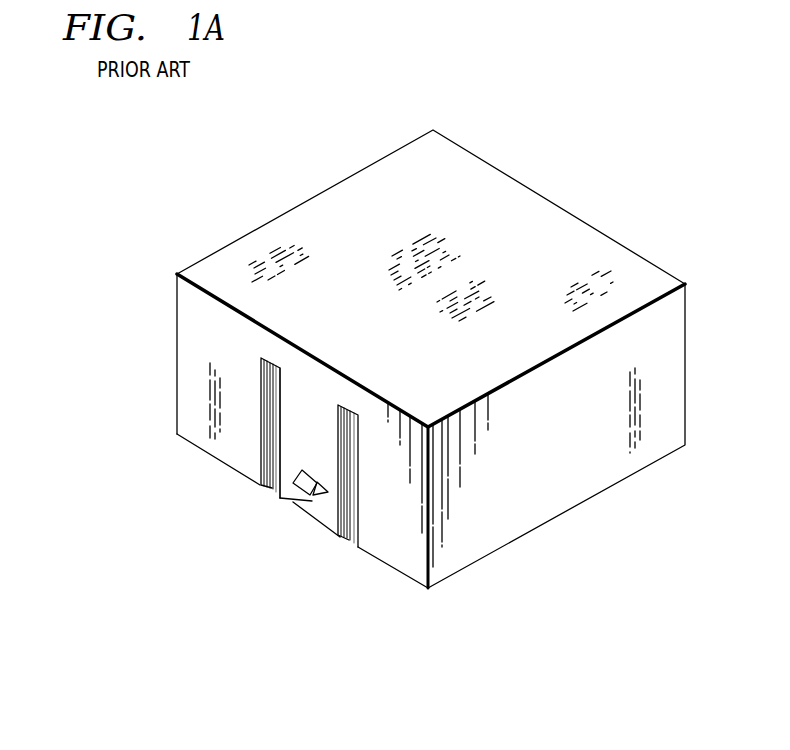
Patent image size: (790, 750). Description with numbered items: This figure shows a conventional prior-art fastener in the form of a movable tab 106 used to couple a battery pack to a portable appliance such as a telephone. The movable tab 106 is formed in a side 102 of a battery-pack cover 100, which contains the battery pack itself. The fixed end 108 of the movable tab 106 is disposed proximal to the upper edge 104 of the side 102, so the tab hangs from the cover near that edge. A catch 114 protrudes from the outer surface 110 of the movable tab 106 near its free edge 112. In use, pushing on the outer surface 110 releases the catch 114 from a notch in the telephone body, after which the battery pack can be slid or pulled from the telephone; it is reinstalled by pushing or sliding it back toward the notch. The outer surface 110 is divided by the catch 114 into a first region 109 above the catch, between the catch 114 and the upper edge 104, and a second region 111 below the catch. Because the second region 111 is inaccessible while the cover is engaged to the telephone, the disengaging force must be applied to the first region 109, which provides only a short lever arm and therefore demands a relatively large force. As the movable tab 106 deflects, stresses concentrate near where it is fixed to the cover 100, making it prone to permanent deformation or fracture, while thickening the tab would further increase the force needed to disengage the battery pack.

The battery-pack cover 100 is at (230, 181).
The side 102 is at (181, 321).
The upper edge 104 is at (236, 322).
The movable tab 106 is at (328, 544).
The fixed end 108 is at (312, 385).
The first region 109 is at (326, 435).
The outer surface 110 is at (287, 447).
The second region 111 is at (282, 499).
The free edge 112 is at (293, 508).
The catch 114 is at (312, 483).